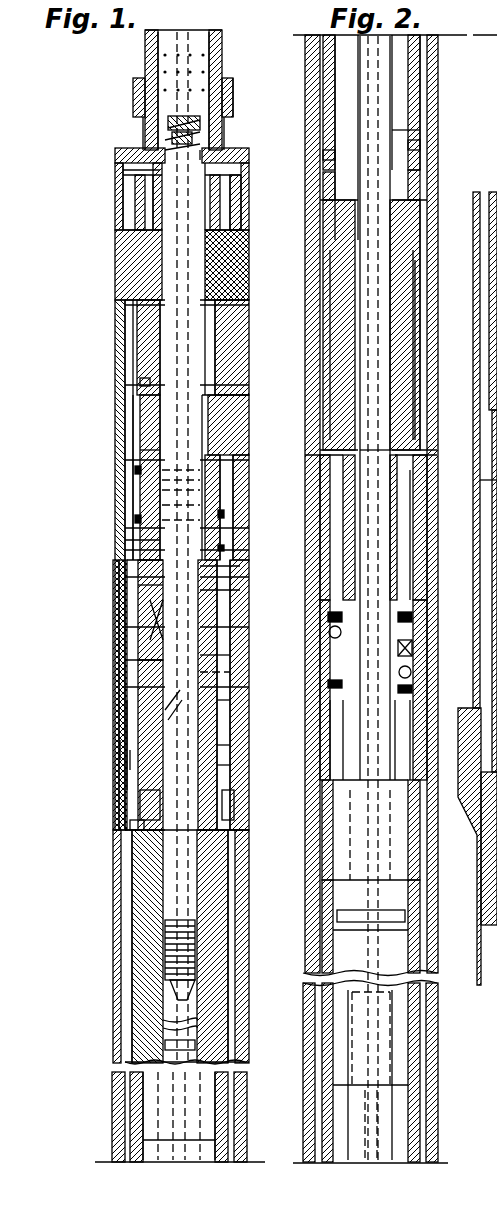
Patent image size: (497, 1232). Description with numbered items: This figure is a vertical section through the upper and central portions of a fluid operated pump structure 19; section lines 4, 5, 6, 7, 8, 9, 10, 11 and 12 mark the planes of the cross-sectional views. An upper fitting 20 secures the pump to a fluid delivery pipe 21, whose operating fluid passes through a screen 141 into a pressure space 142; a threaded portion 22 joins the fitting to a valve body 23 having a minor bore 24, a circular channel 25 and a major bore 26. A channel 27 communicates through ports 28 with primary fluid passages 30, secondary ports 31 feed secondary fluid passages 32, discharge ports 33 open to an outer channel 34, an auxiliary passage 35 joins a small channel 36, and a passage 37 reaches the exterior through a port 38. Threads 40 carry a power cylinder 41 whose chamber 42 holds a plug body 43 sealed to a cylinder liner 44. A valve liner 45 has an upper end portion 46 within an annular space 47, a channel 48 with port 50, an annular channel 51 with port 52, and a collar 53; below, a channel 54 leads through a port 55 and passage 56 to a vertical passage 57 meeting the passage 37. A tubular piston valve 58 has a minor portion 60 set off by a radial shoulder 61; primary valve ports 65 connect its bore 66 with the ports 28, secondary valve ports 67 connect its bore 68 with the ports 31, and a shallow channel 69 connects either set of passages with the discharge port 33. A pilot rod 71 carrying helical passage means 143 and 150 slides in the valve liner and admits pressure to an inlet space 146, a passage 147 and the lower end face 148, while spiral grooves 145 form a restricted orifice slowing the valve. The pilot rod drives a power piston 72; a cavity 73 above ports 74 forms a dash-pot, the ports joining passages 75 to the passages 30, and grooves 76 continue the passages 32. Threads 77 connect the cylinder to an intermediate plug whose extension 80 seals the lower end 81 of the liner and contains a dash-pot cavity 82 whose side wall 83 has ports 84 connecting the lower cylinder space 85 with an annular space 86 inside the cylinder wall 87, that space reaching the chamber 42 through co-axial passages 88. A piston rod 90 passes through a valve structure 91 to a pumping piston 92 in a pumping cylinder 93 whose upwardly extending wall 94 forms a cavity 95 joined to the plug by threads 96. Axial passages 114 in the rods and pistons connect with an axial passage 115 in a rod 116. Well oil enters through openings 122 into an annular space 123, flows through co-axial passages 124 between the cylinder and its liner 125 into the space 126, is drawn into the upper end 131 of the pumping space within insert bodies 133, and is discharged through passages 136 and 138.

In FIG. 1, the section line 4 is at (96, 313).
In FIG. 1, the section line 5 is at (96, 391).
In FIG. 1, the section line 6 is at (96, 467).
In FIG. 1, the section line 7 is at (89, 535).
In FIG. 1, the section line 8 is at (105, 557).
In FIG. 1, the section line 9 is at (105, 584).
In FIG. 1, the section line 10 is at (97, 634).
In FIG. 1, the section line 11 is at (94, 705).
In FIG. 1, the section line 12 is at (96, 838).
In FIG. 1, the pump structure 19 is at (242, 96).
In FIG. 1, the upper fitting 20 is at (140, 106).
In FIG. 1, the fluid delivery pipe 21 is at (148, 66).
In FIG. 1, the threaded portion 22 is at (134, 186).
In FIG. 1, the valve body 23 is at (126, 255).
In FIG. 1, the minor bore 24 is at (138, 232).
In FIG. 1, the circular channel 25 is at (140, 362).
In FIG. 1, the major bore 26 is at (139, 426).
In FIG. 1, the circular channel 27 is at (246, 247).
In FIG. 1, the ports 28 is at (132, 292).
In FIG. 1, the primary fluid passages 30 is at (136, 348).
In FIG. 1, the secondary ports 31 is at (222, 442).
In FIG. 1, the secondary fluid passages 32 is at (226, 501).
In FIG. 1, the discharge ports 33 is at (226, 350).
In FIG. 1, the channel 34 is at (230, 368).
In FIG. 1, the auxiliary discharge passage 35 is at (226, 516).
In FIG. 1, the small channel 36 is at (146, 501).
In FIG. 1, the passage 37 is at (240, 591).
In FIG. 1, the port 38 is at (240, 549).
In FIG. 1, the threads 40 is at (118, 598).
In FIG. 1, the power cylinder 41 is at (118, 943).
In FIG. 2, the power cylinder 41 is at (308, 96).
In FIG. 1, the axial chamber 42 is at (124, 746).
In FIG. 1, the plug body 43 is at (138, 731).
In FIG. 1, the cylinder liner 44 is at (140, 913).
In FIG. 2, the cylinder liner 44 is at (330, 123).
In FIG. 1, the valve liner 45 is at (145, 711).
In FIG. 1, the upper end portion 46 is at (150, 612).
In FIG. 1, the annular space 47 is at (124, 560).
In FIG. 1, the channel 48 is at (160, 564).
In FIG. 1, the port 50 is at (160, 585).
In FIG. 1, the annular channel 51 is at (166, 625).
In FIG. 1, the port 52 is at (216, 606).
In FIG. 1, the collar 53 is at (134, 661).
In FIG. 1, the channel 54 is at (185, 703).
In FIG. 1, the port 55 is at (226, 716).
In FIG. 1, the passage 56 is at (240, 672).
In FIG. 1, the vertical passage 57 is at (236, 796).
In FIG. 1, the piston valve 58 is at (216, 222).
In FIG. 1, the minor portion 60 is at (224, 192).
In FIG. 1, the radial shoulder 61 is at (144, 381).
In FIG. 1, the primary valve ports 65 is at (150, 222).
In FIG. 1, the bore 66 is at (140, 170).
In FIG. 1, the secondary valve ports 67 is at (140, 448).
In FIG. 1, the bore 68 is at (140, 407).
In FIG. 1, the shallow channel 69 is at (134, 300).
In FIG. 1, the pilot rod 71 is at (212, 154).
In FIG. 1, the power piston 72 is at (210, 906).
In FIG. 1, the cavity 73 is at (148, 796).
In FIG. 1, the ports 74 is at (138, 817).
In FIG. 1, the vertical passages 75 is at (130, 760).
In FIG. 1, the fluid passages 76 is at (232, 766).
In FIG. 2, the threads 77 is at (432, 348).
In FIG. 2, the extension 80 is at (420, 196).
In FIG. 2, the lower end 81 is at (416, 102).
In FIG. 2, the dash-pot cavity 82 is at (400, 176).
In FIG. 2, the side wall 83 is at (328, 172).
In FIG. 2, the ports 84 is at (412, 122).
In FIG. 2, the lower cylinder space 85 is at (430, 57).
In FIG. 2, the annular space 86 is at (416, 140).
In FIG. 2, the wall 87 is at (428, 226).
In FIG. 2, the co-axial passages 88 is at (405, 80).
In FIG. 2, the piston rod 90 is at (378, 410).
In FIG. 2, the valve structure 91 is at (430, 612).
In FIG. 2, the pumping piston 92 is at (400, 836).
In FIG. 2, the pumping cylinder 93 is at (435, 920).
In FIG. 2, the upwardly extending wall 94 is at (430, 667).
In FIG. 2, the cavity 95 is at (420, 650).
In FIG. 2, the threads 96 is at (430, 547).
In FIG. 1, the axial passages 114 is at (232, 783).
In FIG. 2, the axial passages 114 is at (370, 60).
In FIG. 2, the axial passage 115 is at (416, 1082).
In FIG. 2, the rod 116 is at (380, 1134).
In FIG. 2, the co-axial openings 122 is at (490, 481).
In FIG. 2, the annular space 123 is at (490, 268).
In FIG. 2, the co-axial passages 124 is at (416, 1036).
In FIG. 2, the liner 125 is at (416, 1000).
In FIG. 2, the space 126 is at (428, 702).
In FIG. 1, the upper end 131 is at (232, 746).
In FIG. 1, the insert bodies 133 is at (232, 705).
In FIG. 2, the co-axial passages 136 is at (490, 233).
In FIG. 2, the passages 138 is at (412, 462).
In FIG. 1, the screen 141 is at (222, 58).
In FIG. 1, the pressure space 142 is at (135, 157).
In FIG. 1, the passage means 143 is at (234, 656).
In FIG. 1, the spiral grooves 145 is at (135, 471).
In FIG. 1, the inlet space 146 is at (135, 521).
In FIG. 1, the passage 147 is at (240, 567).
In FIG. 1, the lower end face 148 is at (128, 545).
In FIG. 2, the lower end face 148 is at (430, 300).
In FIG. 1, the passage means 150 is at (186, 124).